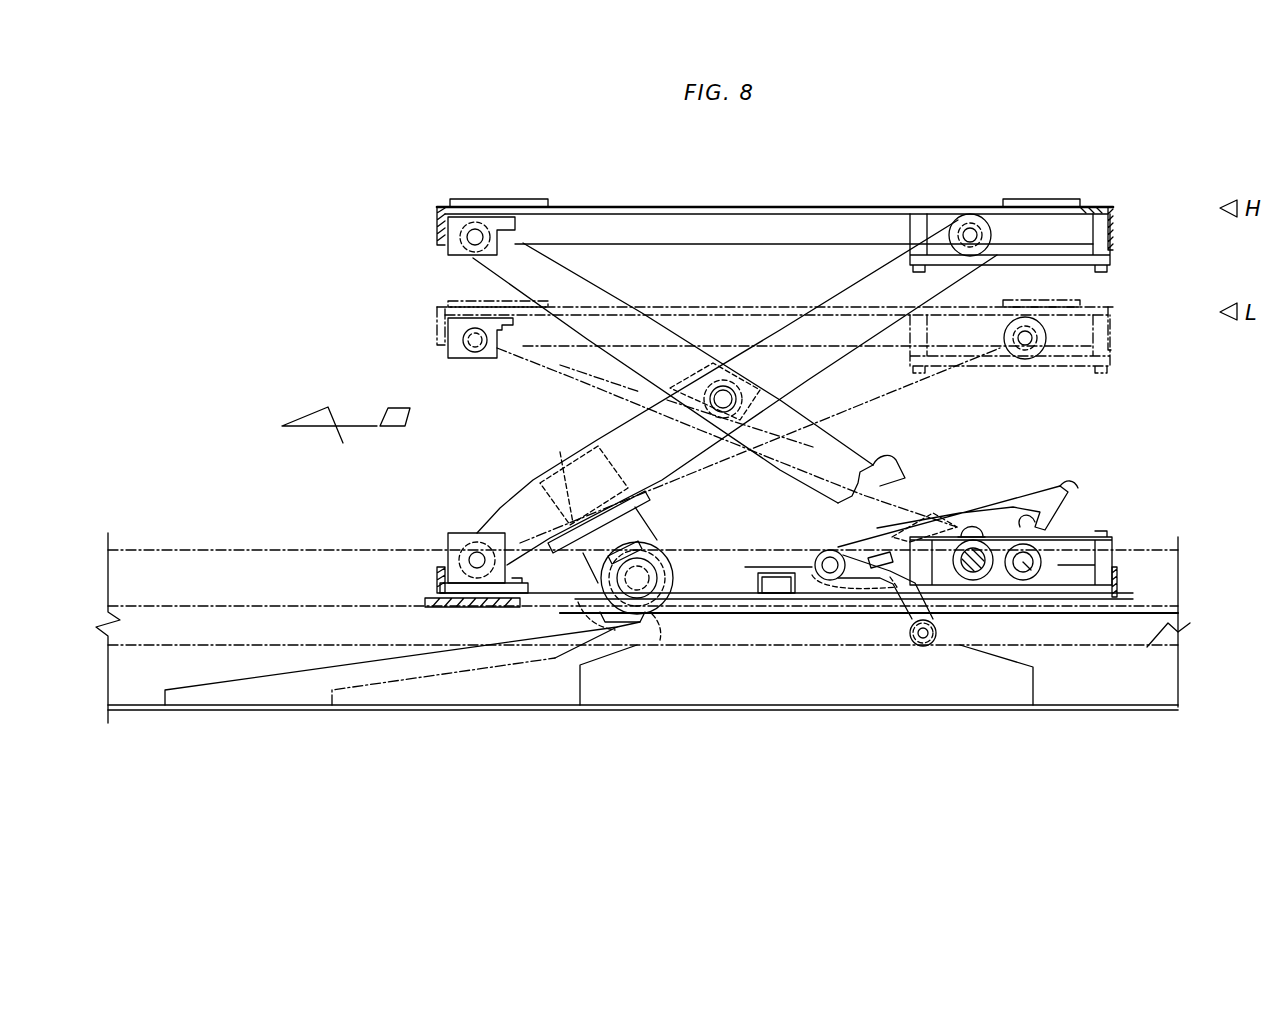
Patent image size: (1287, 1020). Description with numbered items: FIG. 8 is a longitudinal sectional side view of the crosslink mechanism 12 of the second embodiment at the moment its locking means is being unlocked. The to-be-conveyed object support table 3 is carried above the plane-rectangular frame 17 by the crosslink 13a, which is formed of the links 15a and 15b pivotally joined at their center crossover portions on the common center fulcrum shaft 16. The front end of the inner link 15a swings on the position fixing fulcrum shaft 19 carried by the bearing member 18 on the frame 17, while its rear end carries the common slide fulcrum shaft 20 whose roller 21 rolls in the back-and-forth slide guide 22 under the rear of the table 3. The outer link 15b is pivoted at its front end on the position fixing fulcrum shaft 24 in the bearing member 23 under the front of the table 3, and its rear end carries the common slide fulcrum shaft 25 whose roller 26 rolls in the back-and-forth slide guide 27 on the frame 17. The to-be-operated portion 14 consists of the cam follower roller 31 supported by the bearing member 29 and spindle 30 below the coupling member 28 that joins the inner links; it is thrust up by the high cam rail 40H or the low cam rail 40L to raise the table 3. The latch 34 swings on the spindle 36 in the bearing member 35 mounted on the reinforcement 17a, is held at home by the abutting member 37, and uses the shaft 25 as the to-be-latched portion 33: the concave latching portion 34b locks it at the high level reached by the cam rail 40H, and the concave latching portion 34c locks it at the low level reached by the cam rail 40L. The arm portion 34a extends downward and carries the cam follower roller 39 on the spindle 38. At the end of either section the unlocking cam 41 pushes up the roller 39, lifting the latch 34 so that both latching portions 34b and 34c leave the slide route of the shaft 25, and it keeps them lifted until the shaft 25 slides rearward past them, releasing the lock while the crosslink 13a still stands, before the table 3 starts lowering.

The to-be-conveyed object support table 3 is at (692, 317).
The crosslink mechanism 12 is at (505, 286).
The crosslink 13a is at (862, 278).
The to-be-operated portion 14 is at (660, 600).
The link 15a is at (820, 325).
The link 15b is at (608, 345).
The center fulcrum shaft 16 is at (723, 396).
The plane-rectangular frame 17 is at (445, 588).
The reinforcement 17a is at (775, 573).
The bearing member 18 is at (450, 540).
The position fixing fulcrum shaft 19 is at (478, 556).
The common slide fulcrum shaft 20 is at (966, 230).
The roller 21 is at (921, 270).
The back-and-forth slide guide 22 is at (1072, 266).
The bearing member 23 is at (455, 217).
The position fixing fulcrum shaft 24 is at (476, 233).
The common slide fulcrum shaft 25 is at (978, 580).
The roller 26 is at (1028, 582).
The back-and-forth slide guide 27 is at (1090, 537).
The coupling member 28 is at (560, 452).
The bearing member 29 is at (640, 520).
The spindle 30 is at (640, 575).
The cam follower roller 31 is at (693, 602).
The to-be-latched portion 33 is at (963, 530).
The latch 34 is at (1060, 495).
The arm portion 34a is at (907, 600).
The concave latching portion 34b is at (975, 533).
The concave latching portion 34c is at (1065, 492).
The bearing member 35 is at (863, 587).
The spindle 36 is at (827, 560).
The abutting member 37 is at (850, 492).
The spindle 38 is at (923, 647).
The cam follower roller 39 is at (952, 645).
The high cam rail 40H is at (362, 660).
The low cam rail 40L is at (408, 668).
The unlocking cam 41 is at (832, 628).